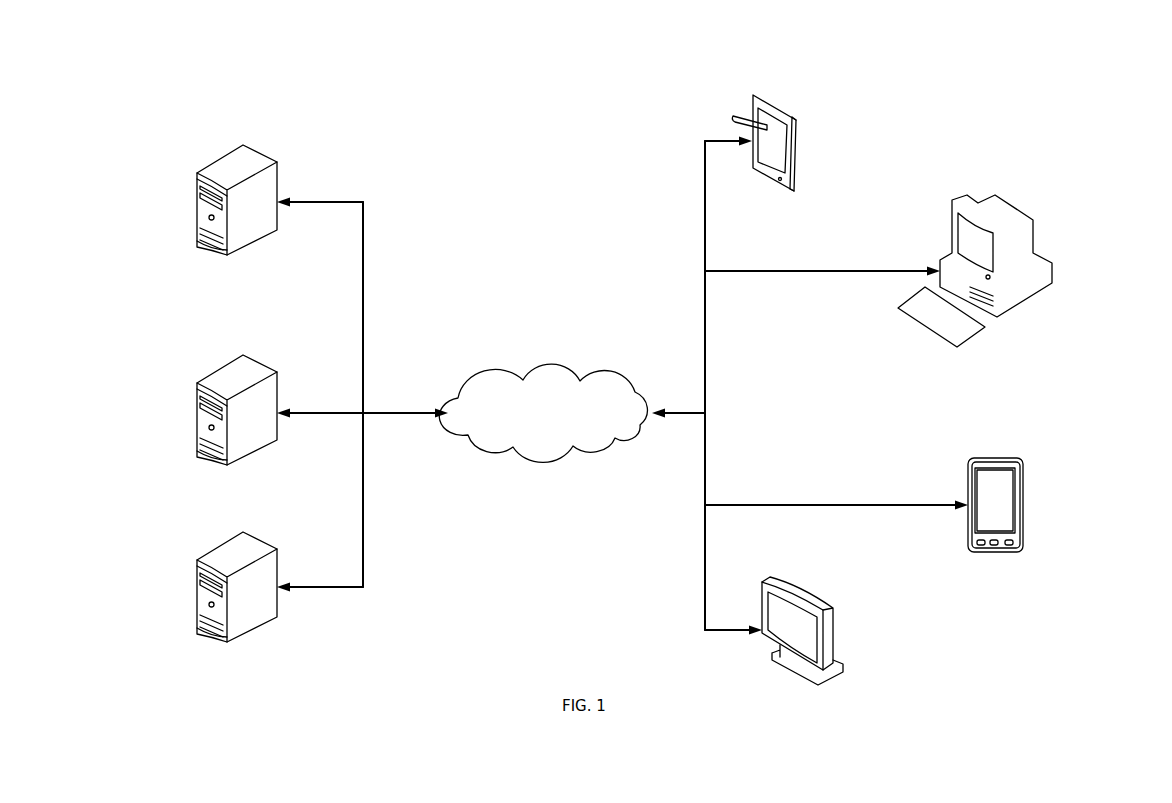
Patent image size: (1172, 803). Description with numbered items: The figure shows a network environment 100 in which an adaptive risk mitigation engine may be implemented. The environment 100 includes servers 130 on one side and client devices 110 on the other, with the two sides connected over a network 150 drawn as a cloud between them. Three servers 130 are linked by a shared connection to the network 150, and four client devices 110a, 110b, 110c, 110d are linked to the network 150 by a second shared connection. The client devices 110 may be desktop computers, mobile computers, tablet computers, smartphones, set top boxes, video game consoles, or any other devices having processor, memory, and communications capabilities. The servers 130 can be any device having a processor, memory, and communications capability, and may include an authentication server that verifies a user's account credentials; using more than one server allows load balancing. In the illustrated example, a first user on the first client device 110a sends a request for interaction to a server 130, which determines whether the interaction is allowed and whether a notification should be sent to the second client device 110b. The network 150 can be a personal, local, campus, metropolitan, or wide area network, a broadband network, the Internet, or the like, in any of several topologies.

The network environment 100 is at (506, 79).
The servers 130 is at (273, 95).
The network 150 is at (520, 372).
The client devices 110 is at (880, 98).
The first client device 110a is at (795, 175).
The second client device 110b is at (1052, 277).
The client device 110c is at (1025, 505).
The client device 110d is at (833, 637).